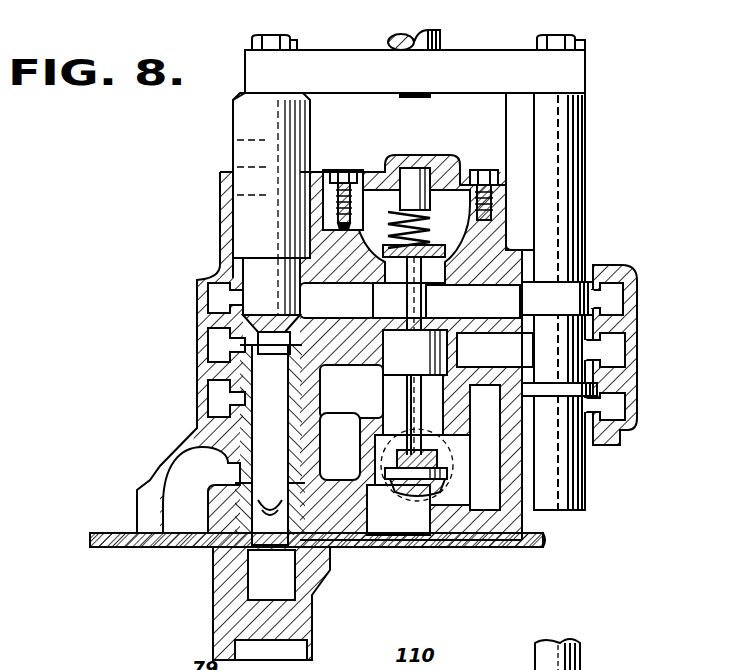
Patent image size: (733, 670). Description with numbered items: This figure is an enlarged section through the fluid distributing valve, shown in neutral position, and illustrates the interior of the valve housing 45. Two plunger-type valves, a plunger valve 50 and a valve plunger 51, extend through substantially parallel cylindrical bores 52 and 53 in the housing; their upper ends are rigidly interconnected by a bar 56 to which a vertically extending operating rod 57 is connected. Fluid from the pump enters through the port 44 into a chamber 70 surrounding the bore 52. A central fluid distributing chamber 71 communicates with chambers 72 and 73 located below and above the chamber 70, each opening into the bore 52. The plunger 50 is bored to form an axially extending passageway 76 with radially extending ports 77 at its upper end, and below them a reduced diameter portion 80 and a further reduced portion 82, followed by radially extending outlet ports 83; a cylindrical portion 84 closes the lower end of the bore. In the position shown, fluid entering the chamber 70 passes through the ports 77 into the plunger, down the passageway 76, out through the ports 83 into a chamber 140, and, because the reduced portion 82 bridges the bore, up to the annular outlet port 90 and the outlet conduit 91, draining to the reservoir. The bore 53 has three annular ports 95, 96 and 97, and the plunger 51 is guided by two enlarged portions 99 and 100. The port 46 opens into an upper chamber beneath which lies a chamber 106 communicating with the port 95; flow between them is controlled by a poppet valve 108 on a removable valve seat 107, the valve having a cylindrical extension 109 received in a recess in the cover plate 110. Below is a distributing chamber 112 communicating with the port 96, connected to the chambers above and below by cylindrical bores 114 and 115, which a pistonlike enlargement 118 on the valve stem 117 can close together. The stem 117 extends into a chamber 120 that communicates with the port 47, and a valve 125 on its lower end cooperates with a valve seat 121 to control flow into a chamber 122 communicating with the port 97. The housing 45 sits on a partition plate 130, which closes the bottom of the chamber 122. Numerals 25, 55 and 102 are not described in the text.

The valve stem 25 is at (275, 291).
The port 44 is at (222, 385).
The valve housing 45 is at (625, 336).
The port 46 is at (463, 175).
The port 47 is at (440, 548).
The plunger valve 50 is at (300, 122).
The valve plunger 51 is at (578, 142).
The cylindrical bore 52 is at (222, 224).
The cylindrical bore 53 is at (603, 445).
The bracket top 55 is at (595, 270).
The bar 56 is at (458, 60).
The operating rod 57 is at (388, 40).
The chamber 70 is at (222, 345).
The fluid distributing chamber 71 is at (350, 399).
The chamber 72 is at (222, 414).
The chamber 73 is at (210, 295).
The axially extending passageway 76 is at (270, 446).
The radially extending ports 77 is at (285, 350).
The reduced diameter portion 80 is at (270, 411).
The reduced diameter portion 82 is at (270, 479).
The radially extending outlet ports 83 is at (272, 499).
The cylindrical portion 84 is at (285, 600).
The outlet port 90 is at (318, 475).
The outlet conduit 91 is at (195, 530).
The annular port 95 is at (620, 298).
The annular port 96 is at (624, 360).
The annular port 97 is at (624, 402).
The enlarged portion 99 is at (558, 298).
The enlarged portion 100 is at (548, 396).
The body corner 102 is at (478, 255).
The chamber 106 is at (488, 298).
The valve seat 107 is at (365, 312).
The poppet valve 108 is at (372, 200).
The cylindrical extension 109 is at (428, 170).
The cover plate 110 is at (410, 168).
The distributing chamber 112 is at (468, 380).
The cylindrical bore 114 is at (446, 315).
The cylindrical bore 115 is at (470, 340).
The stem 117 is at (413, 292).
The pistonlike enlargement 118 is at (410, 351).
The chamber 120 is at (445, 462).
The valve seat 121 is at (375, 540).
The chamber 122 is at (492, 403).
The valve 125 is at (410, 540).
The partition plate 130 is at (543, 547).
The chamber 140 is at (232, 580).